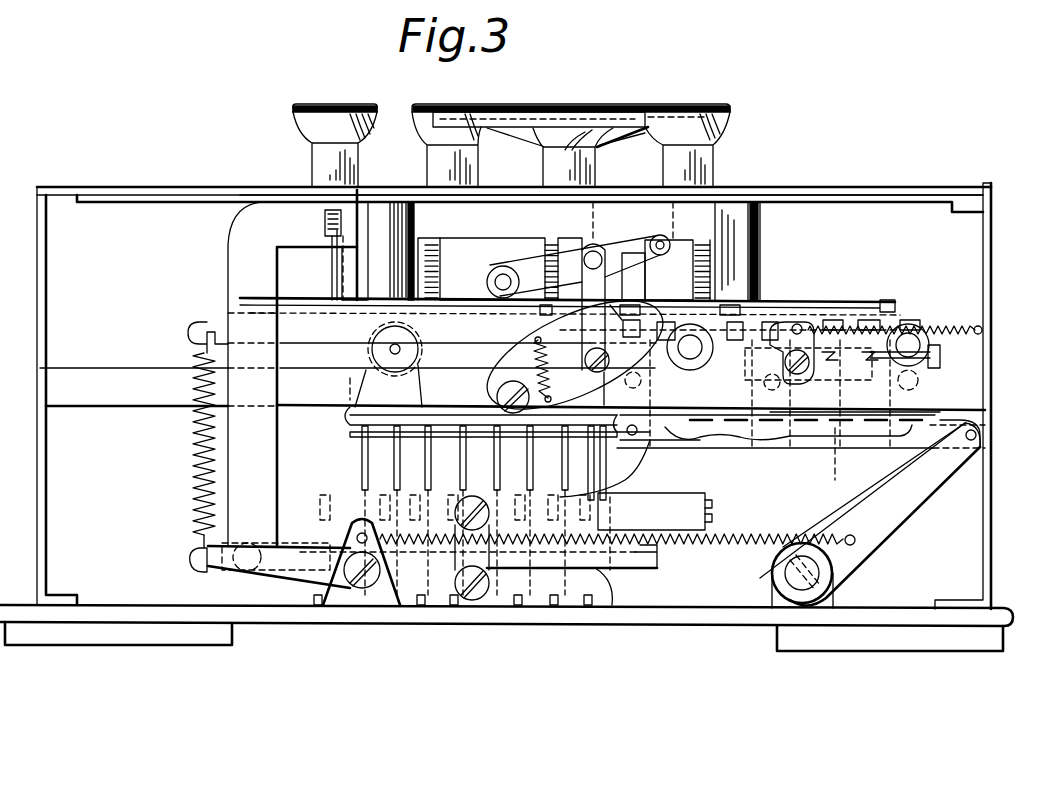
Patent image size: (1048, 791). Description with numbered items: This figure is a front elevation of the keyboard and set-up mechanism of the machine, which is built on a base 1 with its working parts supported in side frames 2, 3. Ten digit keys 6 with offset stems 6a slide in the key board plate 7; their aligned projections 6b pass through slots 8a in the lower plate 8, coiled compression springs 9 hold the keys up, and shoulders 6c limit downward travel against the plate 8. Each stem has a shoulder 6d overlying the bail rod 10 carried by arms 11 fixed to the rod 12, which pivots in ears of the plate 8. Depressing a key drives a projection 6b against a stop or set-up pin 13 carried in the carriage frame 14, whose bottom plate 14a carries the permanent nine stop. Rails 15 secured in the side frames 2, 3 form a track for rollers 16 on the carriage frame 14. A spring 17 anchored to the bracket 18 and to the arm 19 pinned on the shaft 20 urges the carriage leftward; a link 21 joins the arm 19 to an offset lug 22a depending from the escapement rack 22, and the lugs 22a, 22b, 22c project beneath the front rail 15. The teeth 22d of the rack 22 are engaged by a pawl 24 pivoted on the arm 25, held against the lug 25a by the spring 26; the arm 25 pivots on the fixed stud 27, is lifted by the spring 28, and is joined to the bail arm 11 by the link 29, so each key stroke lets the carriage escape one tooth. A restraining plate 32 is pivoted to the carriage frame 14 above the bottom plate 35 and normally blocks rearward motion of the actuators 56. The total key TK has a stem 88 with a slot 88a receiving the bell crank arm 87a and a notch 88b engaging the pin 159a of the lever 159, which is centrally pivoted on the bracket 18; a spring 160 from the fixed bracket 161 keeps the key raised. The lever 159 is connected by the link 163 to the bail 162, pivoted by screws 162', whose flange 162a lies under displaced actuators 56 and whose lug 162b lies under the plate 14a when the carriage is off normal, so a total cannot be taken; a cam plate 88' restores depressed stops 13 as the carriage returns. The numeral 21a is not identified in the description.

The base 1 is at (162, 625).
The side frame 2 is at (991, 300).
The side frame 3 is at (40, 262).
The digit key 6 is at (712, 128).
The offset stem 6a is at (503, 232).
The projection 6b is at (669, 270).
The shoulder 6c is at (598, 245).
The shoulder 6d is at (668, 238).
The key board plate 7 is at (836, 197).
The lower plate 8 is at (855, 308).
The slot 8a is at (712, 262).
The coiled compression spring 9 is at (424, 256).
The bail rod 10 is at (662, 251).
The arm 11 is at (534, 266).
The rod 12 is at (487, 282).
The stop or set-up pin 13 is at (780, 330).
The carriage frame 14 is at (935, 366).
The bottom plate 14a is at (844, 455).
The rail 15 is at (118, 400).
The roller 16 is at (950, 328).
The spring 17 is at (783, 547).
The bracket 18 is at (348, 590).
The arm 19 is at (862, 545).
The shaft 20 is at (800, 585).
The link 21 is at (742, 425).
The arm 21a is at (612, 340).
The escapement rack 22 is at (900, 338).
The offset lug 22a is at (650, 438).
The lug 22b is at (778, 425).
The lug 22c is at (900, 430).
The tooth 22d is at (880, 325).
The pawl 24 is at (574, 388).
The arm 25 is at (720, 377).
The lug 25a is at (585, 332).
The spring 26 is at (525, 365).
The fixed stud 27 is at (810, 378).
The spring 28 is at (825, 325).
The link 29 is at (650, 265).
The restraining plate 32 is at (444, 438).
The bottom plate 35 is at (418, 415).
The actuator 56 is at (651, 521).
The stem 88 is at (281, 373).
The cam plate 88' is at (605, 468).
The slot 88a is at (325, 222).
The notch 88b is at (206, 566).
The arm 87a is at (328, 213).
The lever 159 is at (277, 575).
The pin 159a is at (245, 562).
The spring 160 is at (195, 500).
The fixed bracket 161 is at (218, 327).
The bail 162 is at (577, 594).
The screw 162' is at (734, 509).
The flange 162a is at (620, 570).
The lug 162b is at (590, 470).
The link 163 is at (490, 580).
The total key TK is at (315, 104).